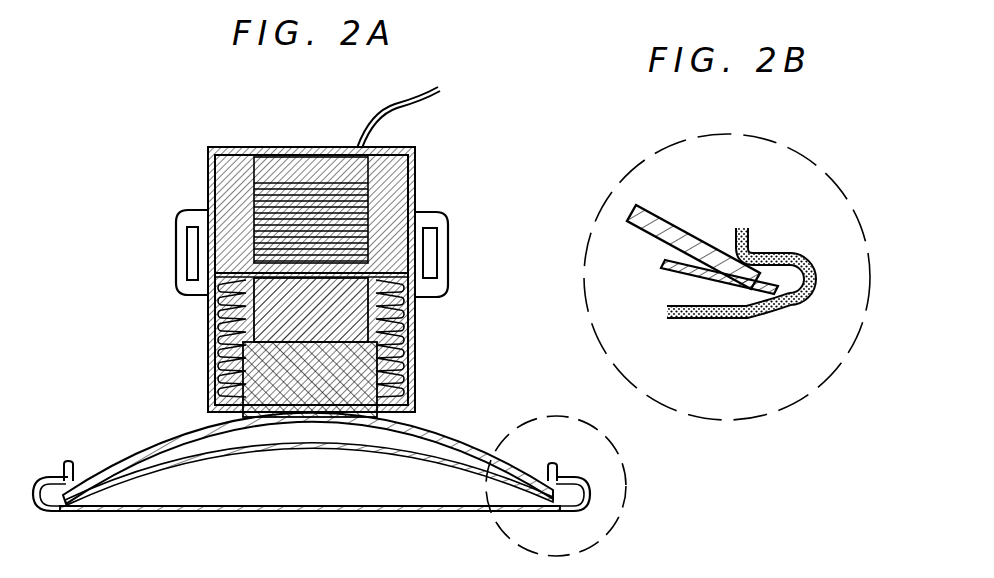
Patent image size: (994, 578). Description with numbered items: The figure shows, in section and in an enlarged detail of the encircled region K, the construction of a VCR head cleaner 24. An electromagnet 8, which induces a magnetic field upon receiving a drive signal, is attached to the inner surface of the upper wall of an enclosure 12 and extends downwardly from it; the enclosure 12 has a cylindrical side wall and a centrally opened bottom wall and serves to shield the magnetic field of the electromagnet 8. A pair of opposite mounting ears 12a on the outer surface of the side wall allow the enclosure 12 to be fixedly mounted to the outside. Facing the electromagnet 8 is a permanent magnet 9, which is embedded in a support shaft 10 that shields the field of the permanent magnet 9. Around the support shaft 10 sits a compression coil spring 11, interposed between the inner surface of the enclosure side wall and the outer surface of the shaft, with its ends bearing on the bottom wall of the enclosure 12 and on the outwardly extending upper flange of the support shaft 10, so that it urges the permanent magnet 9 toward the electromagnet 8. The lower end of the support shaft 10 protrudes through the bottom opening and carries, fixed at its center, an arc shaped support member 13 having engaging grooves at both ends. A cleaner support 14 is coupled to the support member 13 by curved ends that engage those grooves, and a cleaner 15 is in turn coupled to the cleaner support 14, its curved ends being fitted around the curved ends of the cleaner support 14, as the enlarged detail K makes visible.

In FIG. 2A, the head cleaner 24 is at (255, 130).
In FIG. 2A, the electromagnet 8 is at (315, 185).
In FIG. 2A, the permanent magnet 9 is at (345, 312).
In FIG. 2A, the support shaft 10 is at (355, 411).
In FIG. 2A, the compression coil spring 11 is at (223, 335).
In FIG. 2A, the enclosure 12 is at (415, 168).
In FIG. 2A, the mounting ears 12a is at (440, 214).
In FIG. 2A, the support member 13 is at (150, 447).
In FIG. 2B, the support member 13 is at (670, 233).
In FIG. 2A, the cleaner support 14 is at (355, 447).
In FIG. 2B, the cleaner support 14 is at (743, 224).
In FIG. 2A, the cleaner 15 is at (423, 512).
In FIG. 2B, the cleaner 15 is at (750, 323).
In FIG. 2A, the detail region K is at (620, 507).
In FIG. 2B, the detail region K is at (817, 163).